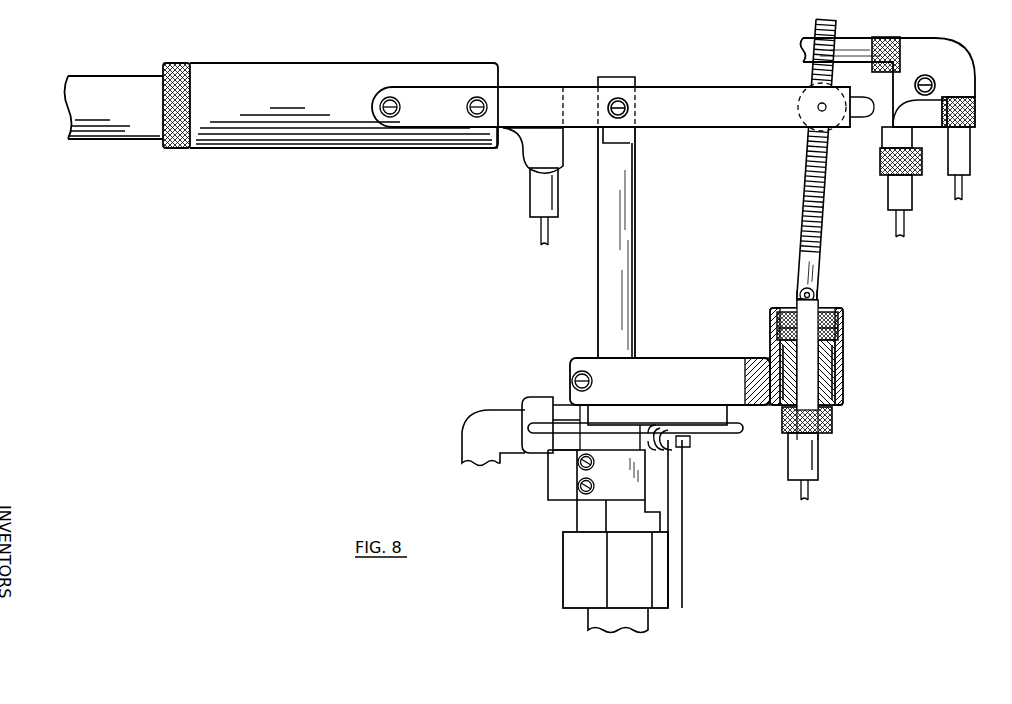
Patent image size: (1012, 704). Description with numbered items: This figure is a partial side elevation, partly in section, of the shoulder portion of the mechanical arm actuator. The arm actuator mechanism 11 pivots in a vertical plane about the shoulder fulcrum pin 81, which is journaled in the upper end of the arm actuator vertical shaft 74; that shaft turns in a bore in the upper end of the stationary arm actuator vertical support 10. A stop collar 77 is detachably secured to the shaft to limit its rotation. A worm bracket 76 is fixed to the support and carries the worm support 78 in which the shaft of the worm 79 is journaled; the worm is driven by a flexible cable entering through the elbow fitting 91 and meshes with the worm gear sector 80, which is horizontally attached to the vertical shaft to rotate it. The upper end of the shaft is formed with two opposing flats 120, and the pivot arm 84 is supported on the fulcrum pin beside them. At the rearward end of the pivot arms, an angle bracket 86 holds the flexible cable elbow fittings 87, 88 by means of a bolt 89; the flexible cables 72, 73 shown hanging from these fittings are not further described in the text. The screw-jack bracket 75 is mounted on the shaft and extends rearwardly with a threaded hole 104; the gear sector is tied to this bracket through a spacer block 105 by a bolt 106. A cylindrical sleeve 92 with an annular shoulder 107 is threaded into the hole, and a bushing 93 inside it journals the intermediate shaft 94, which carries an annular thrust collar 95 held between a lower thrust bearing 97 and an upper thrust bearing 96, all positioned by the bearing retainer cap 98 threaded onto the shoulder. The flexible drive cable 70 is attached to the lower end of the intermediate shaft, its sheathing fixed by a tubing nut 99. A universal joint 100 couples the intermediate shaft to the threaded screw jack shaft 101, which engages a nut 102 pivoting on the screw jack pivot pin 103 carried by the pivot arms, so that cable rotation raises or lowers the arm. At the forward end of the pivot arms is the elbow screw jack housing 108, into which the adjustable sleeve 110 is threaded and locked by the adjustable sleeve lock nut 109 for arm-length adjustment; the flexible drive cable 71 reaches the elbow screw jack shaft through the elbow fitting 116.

The arm actuator vertical support 10 is at (598, 617).
The arm actuator mechanism 11 is at (578, 60).
The flexible drive cable 70 is at (810, 492).
The flexible drive cable 71 is at (538, 232).
The stylus 72 is at (906, 230).
The stylus 73 is at (964, 192).
The arm actuator vertical shaft 74 is at (622, 168).
The screw-jack bracket 75 is at (705, 364).
The worm bracket 76 is at (672, 542).
The stop collar 77 is at (582, 488).
The worm support 78 is at (545, 398).
The worm 79 is at (668, 446).
The worm gear sector 80 is at (565, 433).
The shoulder fulcrum pin 81 is at (628, 100).
The pivot arm 84 is at (672, 97).
The angle bracket 86 is at (920, 108).
The flexible cable elbow fitting 87 is at (955, 38).
The flexible cable elbow fitting 88 is at (888, 134).
The bolt 89 is at (932, 80).
The elbow fitting 91 is at (485, 422).
The cylindrical sleeve 92 is at (826, 392).
The bushing 93 is at (832, 414).
The intermediate shaft 94 is at (830, 378).
The annular thrust collar 95 is at (838, 322).
The thrust bearing 96 is at (790, 312).
The thrust bearing 97 is at (790, 330).
The bearing retainer cap 98 is at (776, 322).
The tubing nut 99 is at (826, 432).
The universal joint 100 is at (820, 290).
The threaded screw jack shaft 101 is at (812, 180).
The nut 102 is at (812, 130).
The screw jack pivot pin 103 is at (815, 104).
The threaded hole 104 is at (836, 366).
The spacer block 105 is at (727, 420).
The bolt 106 is at (692, 442).
The annular shoulder 107 is at (838, 348).
The elbow screw jack housing 108 is at (280, 78).
The adjustable sleeve lock nut 109 is at (180, 63).
The adjustable sleeve 110 is at (90, 80).
The elbow fitting 116 is at (520, 160).
The flats 120 is at (616, 76).